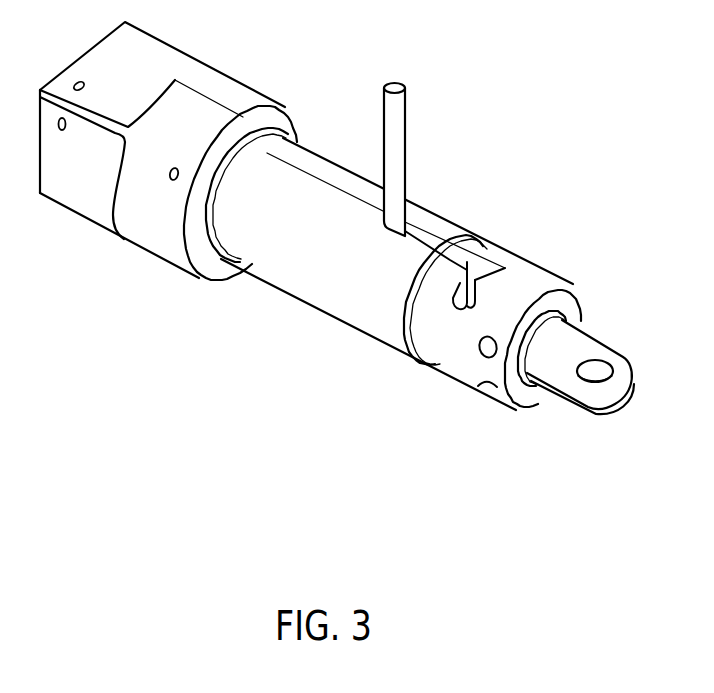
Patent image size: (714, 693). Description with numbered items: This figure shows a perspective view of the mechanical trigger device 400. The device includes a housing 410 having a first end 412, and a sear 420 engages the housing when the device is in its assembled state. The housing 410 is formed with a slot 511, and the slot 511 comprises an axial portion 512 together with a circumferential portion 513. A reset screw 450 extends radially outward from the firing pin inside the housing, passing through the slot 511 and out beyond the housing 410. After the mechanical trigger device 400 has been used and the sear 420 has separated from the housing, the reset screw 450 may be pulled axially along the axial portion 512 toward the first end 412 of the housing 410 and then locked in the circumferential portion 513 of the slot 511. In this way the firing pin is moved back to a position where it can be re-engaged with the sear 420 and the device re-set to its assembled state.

The mechanical trigger device 400 is at (373, 218).
The housing 410 is at (300, 201).
The first end 412 is at (520, 308).
The sear 420 is at (575, 347).
The reset screw 450 is at (393, 163).
The slot 511 is at (433, 240).
The axial portion 512 is at (453, 258).
The circumferential portion 513 is at (472, 292).